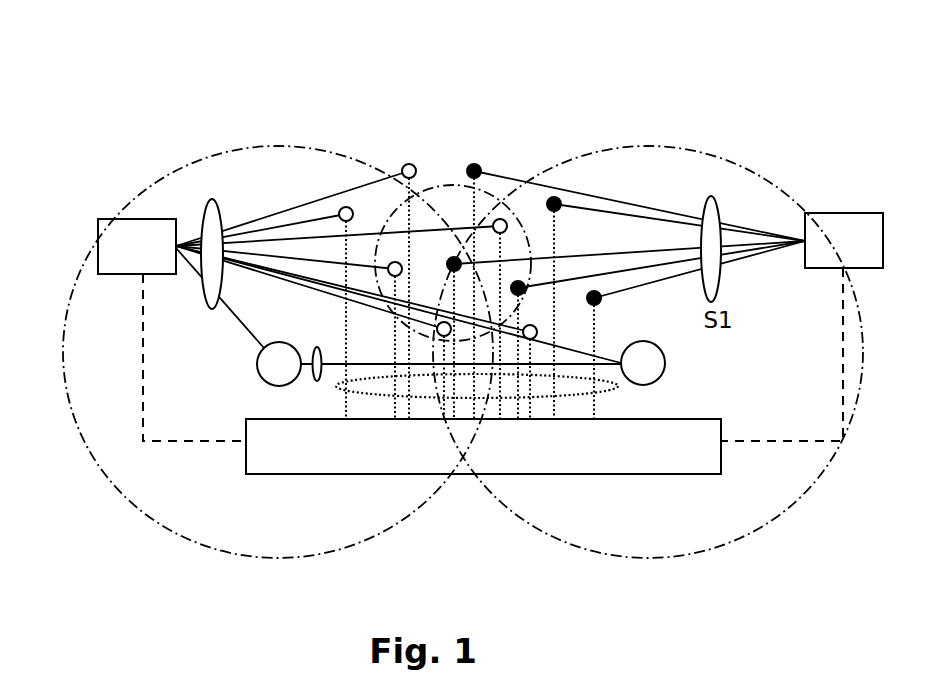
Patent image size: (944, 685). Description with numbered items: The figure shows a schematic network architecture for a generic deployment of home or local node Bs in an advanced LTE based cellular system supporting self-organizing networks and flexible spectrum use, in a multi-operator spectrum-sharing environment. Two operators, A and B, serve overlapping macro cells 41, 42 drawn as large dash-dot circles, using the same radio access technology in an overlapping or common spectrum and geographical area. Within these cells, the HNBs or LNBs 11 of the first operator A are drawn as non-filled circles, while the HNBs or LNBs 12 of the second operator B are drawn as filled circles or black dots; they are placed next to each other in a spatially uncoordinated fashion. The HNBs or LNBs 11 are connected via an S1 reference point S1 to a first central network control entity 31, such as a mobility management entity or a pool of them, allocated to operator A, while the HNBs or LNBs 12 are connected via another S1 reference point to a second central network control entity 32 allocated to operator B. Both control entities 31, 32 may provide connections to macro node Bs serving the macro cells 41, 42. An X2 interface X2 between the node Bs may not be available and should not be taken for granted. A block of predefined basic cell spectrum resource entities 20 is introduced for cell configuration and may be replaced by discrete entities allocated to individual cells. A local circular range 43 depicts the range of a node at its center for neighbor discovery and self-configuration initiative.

The HNBs or LNBs of the first operator A 11 is at (417, 201).
The HNBs or LNBs of the second operator B 12 is at (540, 200).
The predefined basic cell spectrum resource (PBCSR) entities 20 is at (493, 371).
The first central network control entity 31 is at (359, 267).
The second central network control entity 32 is at (668, 234).
The macro cell 41 is at (278, 320).
The macro cell 42 is at (648, 329).
The local circular range 43 is at (454, 194).
The S1 reference point S1 is at (232, 256).
The X2 interface X2 is at (324, 353).